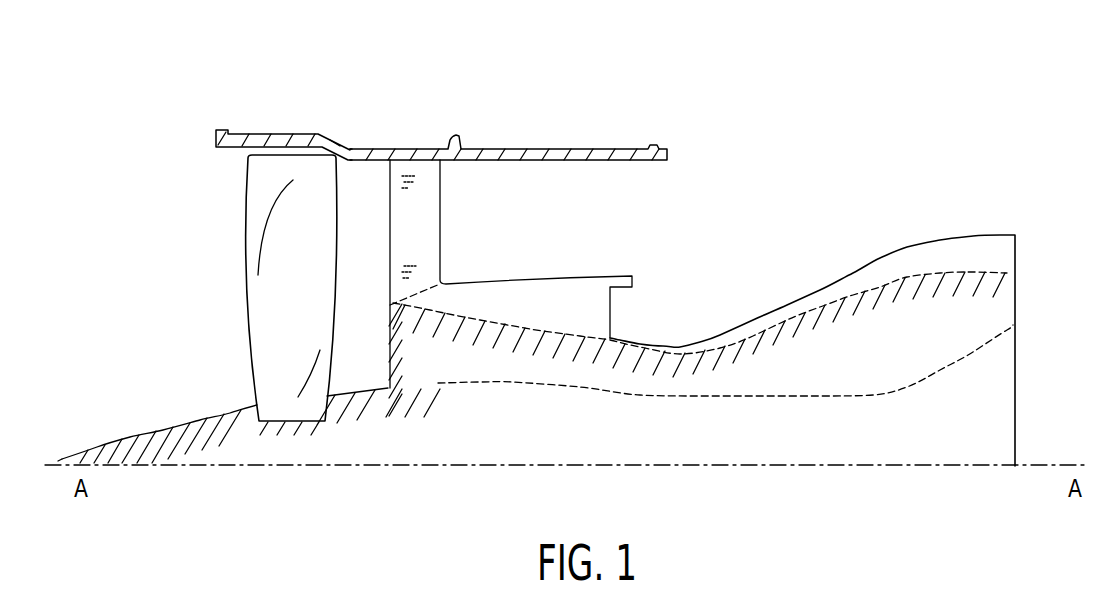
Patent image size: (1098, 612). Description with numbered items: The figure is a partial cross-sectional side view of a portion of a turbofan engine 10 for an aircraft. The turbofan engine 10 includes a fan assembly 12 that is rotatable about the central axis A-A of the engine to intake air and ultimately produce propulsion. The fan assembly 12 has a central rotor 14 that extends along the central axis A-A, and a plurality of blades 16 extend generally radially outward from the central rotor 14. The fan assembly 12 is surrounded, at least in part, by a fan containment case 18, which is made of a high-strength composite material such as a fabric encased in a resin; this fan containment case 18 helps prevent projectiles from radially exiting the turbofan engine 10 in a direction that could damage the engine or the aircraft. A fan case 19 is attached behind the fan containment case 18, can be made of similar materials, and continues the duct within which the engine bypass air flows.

The turbofan engine 10 is at (788, 105).
The fan assembly 12 is at (249, 343).
The central rotor 14 is at (230, 445).
The blades 16 is at (327, 262).
The fan containment case 18 is at (340, 146).
The fan case 19 is at (555, 150).